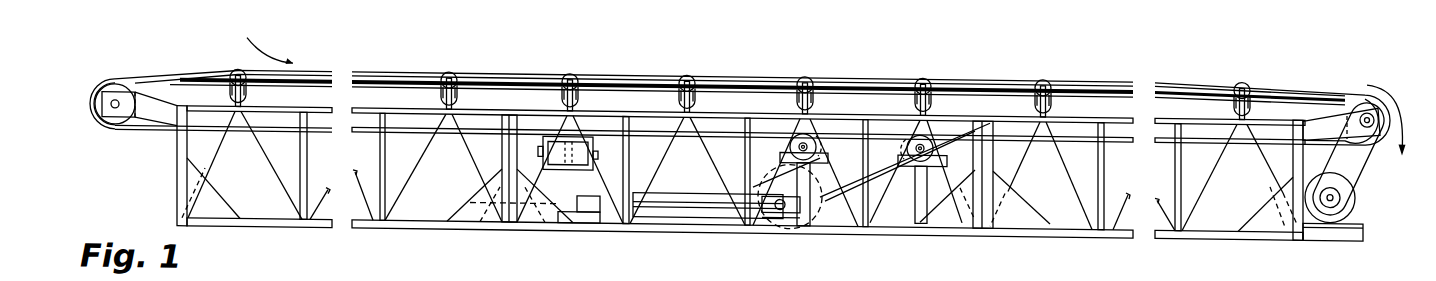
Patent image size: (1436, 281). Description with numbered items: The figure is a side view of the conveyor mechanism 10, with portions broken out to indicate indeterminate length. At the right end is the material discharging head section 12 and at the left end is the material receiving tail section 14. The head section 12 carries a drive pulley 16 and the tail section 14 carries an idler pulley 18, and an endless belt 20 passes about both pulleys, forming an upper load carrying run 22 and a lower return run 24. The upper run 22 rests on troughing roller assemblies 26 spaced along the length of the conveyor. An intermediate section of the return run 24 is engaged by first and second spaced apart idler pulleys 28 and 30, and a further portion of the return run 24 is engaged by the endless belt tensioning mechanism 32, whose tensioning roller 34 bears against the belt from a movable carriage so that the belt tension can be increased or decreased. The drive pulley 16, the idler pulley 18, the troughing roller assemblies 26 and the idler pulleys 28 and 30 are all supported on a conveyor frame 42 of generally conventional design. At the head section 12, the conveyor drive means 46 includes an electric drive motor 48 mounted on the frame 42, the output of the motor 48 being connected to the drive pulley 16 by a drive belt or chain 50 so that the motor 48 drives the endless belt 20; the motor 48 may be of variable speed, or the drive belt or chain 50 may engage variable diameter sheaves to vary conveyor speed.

The conveyor mechanism 10 is at (137, 183).
The head section 12 is at (1352, 62).
The tail section 14 is at (118, 66).
The drive pulley 16 is at (1379, 131).
The idler pulley 18 is at (104, 131).
The endless belt 20 is at (91, 106).
The upper load carrying run 22 is at (362, 72).
The lower return run 24 is at (363, 133).
The troughing roller assemblies 26 is at (580, 75).
The first idler pulley 28 is at (800, 129).
The second idler pulley 30 is at (931, 133).
The endless belt tensioning mechanism 32 is at (580, 237).
The tensioning roller 34 is at (783, 228).
The conveyor frame 42 is at (1108, 235).
The conveyor drive means 46 is at (1377, 219).
The electric drive motor 48 is at (1357, 190).
The drive belt or chain 50 is at (1360, 162).